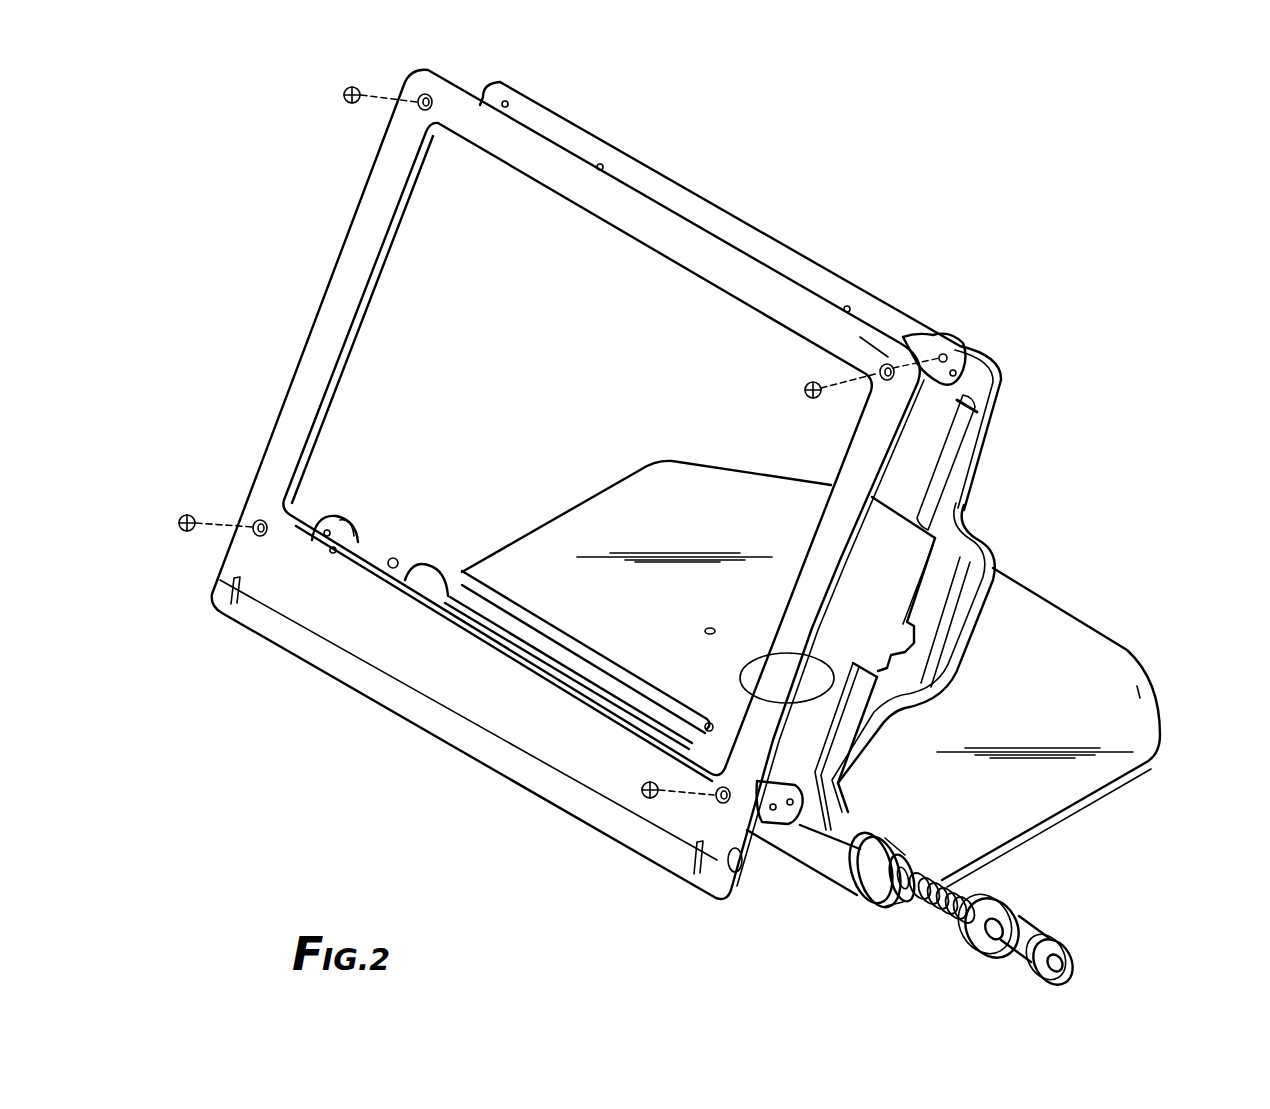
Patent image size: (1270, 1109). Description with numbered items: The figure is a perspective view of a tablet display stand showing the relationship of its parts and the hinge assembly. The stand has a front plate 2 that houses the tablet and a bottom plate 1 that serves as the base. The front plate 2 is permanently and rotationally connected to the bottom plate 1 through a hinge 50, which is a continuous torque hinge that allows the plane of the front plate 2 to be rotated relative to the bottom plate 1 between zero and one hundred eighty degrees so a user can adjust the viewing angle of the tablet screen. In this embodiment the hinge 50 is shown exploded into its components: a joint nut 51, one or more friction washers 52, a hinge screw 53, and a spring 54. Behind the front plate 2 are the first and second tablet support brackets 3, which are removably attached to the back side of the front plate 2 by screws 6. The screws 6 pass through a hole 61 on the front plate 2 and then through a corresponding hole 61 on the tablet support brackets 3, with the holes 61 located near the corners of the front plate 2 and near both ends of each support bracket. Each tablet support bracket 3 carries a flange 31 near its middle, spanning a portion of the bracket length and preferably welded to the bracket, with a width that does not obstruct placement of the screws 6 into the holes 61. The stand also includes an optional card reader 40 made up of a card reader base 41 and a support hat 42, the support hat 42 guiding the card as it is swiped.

The bottom plate 1 is at (1140, 687).
The front plate 2 is at (327, 332).
The tablet support brackets 3 is at (557, 130).
The screws 6 is at (343, 94).
The flange 31 is at (602, 647).
The card reader 40 is at (1007, 437).
The card reader base 41 is at (807, 820).
The support hat 42 is at (930, 617).
The hinge 50 is at (1027, 870).
The joint nut 51 is at (1030, 933).
The friction washers 52 is at (997, 897).
The hinge screw 53 is at (913, 910).
The spring 54 is at (947, 917).
The hole 61 is at (935, 335).